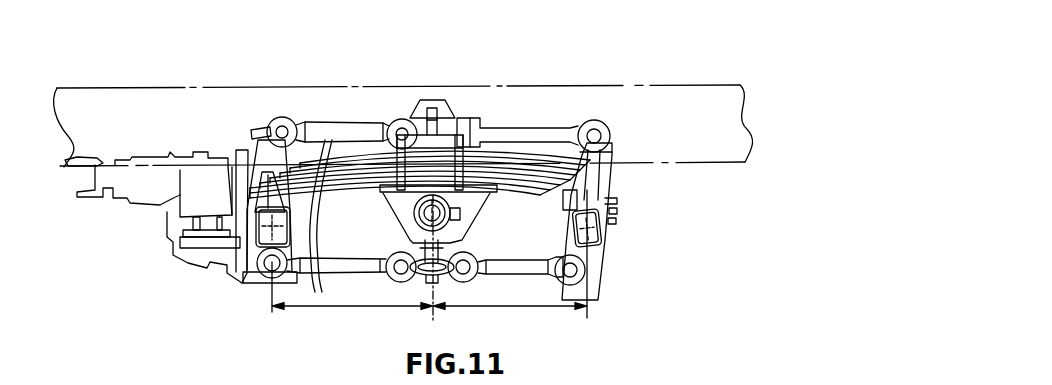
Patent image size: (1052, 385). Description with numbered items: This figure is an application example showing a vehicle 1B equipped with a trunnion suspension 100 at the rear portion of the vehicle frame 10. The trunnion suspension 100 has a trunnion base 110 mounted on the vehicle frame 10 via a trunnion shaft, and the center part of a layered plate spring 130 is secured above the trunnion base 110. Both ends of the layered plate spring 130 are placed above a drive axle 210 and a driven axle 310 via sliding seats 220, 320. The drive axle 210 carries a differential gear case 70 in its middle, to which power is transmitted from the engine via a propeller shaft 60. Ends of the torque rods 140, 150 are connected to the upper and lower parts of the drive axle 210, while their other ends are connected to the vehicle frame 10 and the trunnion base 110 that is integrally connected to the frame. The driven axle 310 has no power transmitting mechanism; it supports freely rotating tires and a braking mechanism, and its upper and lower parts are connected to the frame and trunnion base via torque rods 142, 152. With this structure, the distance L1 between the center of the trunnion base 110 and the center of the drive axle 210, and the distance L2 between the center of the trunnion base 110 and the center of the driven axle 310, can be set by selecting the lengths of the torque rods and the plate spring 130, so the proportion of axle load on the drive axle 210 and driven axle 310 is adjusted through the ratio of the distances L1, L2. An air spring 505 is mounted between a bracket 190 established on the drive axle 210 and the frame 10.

The vehicle 1B is at (674, 35).
The vehicle frame 10 is at (163, 103).
The propeller shaft 60 is at (97, 163).
The differential gear case 70 is at (316, 235).
The trunnion suspension 100 is at (460, 74).
The trunnion base 110 is at (393, 280).
The layered plate spring 130 is at (408, 120).
The torque rod 140 is at (307, 287).
The torque rod 142 is at (502, 258).
The torque rod 150 is at (330, 120).
The torque rod 152 is at (553, 120).
The bracket 190 is at (192, 245).
The drive axle 210 is at (232, 253).
The sliding seat 220 is at (243, 165).
The driven axle 310 is at (607, 237).
The sliding seat 320 is at (613, 208).
The air spring 505 is at (160, 206).
The distance L1 is at (352, 257).
The distance L2 is at (510, 254).